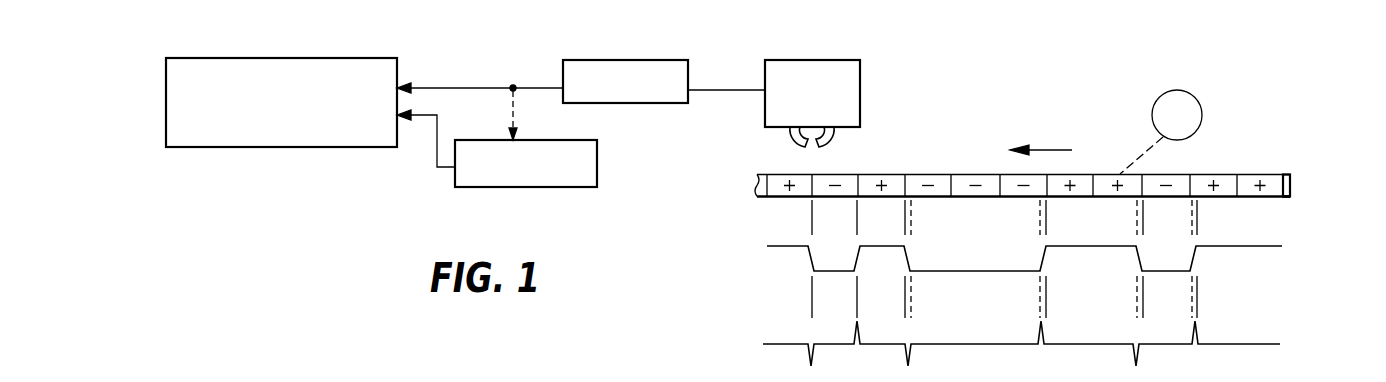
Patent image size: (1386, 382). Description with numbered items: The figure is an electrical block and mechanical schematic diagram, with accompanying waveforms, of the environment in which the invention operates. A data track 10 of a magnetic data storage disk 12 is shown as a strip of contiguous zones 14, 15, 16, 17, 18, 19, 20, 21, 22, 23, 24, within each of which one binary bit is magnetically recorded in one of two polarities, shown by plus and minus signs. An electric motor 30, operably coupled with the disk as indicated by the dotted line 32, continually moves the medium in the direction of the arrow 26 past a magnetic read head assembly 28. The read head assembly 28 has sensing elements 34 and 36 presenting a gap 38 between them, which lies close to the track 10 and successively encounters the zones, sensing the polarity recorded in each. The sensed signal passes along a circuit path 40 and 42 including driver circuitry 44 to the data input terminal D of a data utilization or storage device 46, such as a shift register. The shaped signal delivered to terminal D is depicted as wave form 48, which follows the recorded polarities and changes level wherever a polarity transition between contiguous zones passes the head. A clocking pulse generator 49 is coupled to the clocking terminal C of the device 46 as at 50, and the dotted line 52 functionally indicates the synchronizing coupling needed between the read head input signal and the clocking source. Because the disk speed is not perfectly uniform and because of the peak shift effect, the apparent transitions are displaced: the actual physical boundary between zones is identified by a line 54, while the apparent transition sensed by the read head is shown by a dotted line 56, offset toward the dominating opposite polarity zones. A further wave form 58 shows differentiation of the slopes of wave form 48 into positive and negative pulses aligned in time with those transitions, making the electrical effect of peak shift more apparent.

The data track 10 is at (1292, 186).
The magnetic data storage disk 12 is at (1282, 197).
The zone 14 is at (782, 173).
The zone 15 is at (835, 174).
The zone 16 is at (882, 174).
The zone 17 is at (927, 174).
The zone 18 is at (974, 174).
The zone 19 is at (1017, 174).
The zone 20 is at (1060, 174).
The zone 21 is at (1130, 174).
The zone 22 is at (1175, 174).
The zone 23 is at (1222, 174).
The zone 24 is at (1263, 174).
The arrow 26 is at (1030, 150).
The read head assembly 28 is at (861, 72).
The electric motor 30 is at (1198, 101).
The dotted line 32 is at (1143, 151).
The sensing element 34 is at (791, 133).
The sensing element 36 is at (835, 133).
The gap 38 is at (810, 149).
The circuit path 40 is at (709, 89).
The circuit path 42 is at (498, 84).
The driver circuitry 44 is at (611, 59).
The data utilization or storage device 46 is at (288, 58).
The input signal wave form 48 is at (774, 244).
The clocking pulse generator 49 is at (597, 154).
The coupling 50 is at (437, 124).
The dotted line 52 is at (514, 103).
The line 54 is at (904, 216).
The dotted line 56 is at (912, 216).
The wave form 58 is at (779, 343).